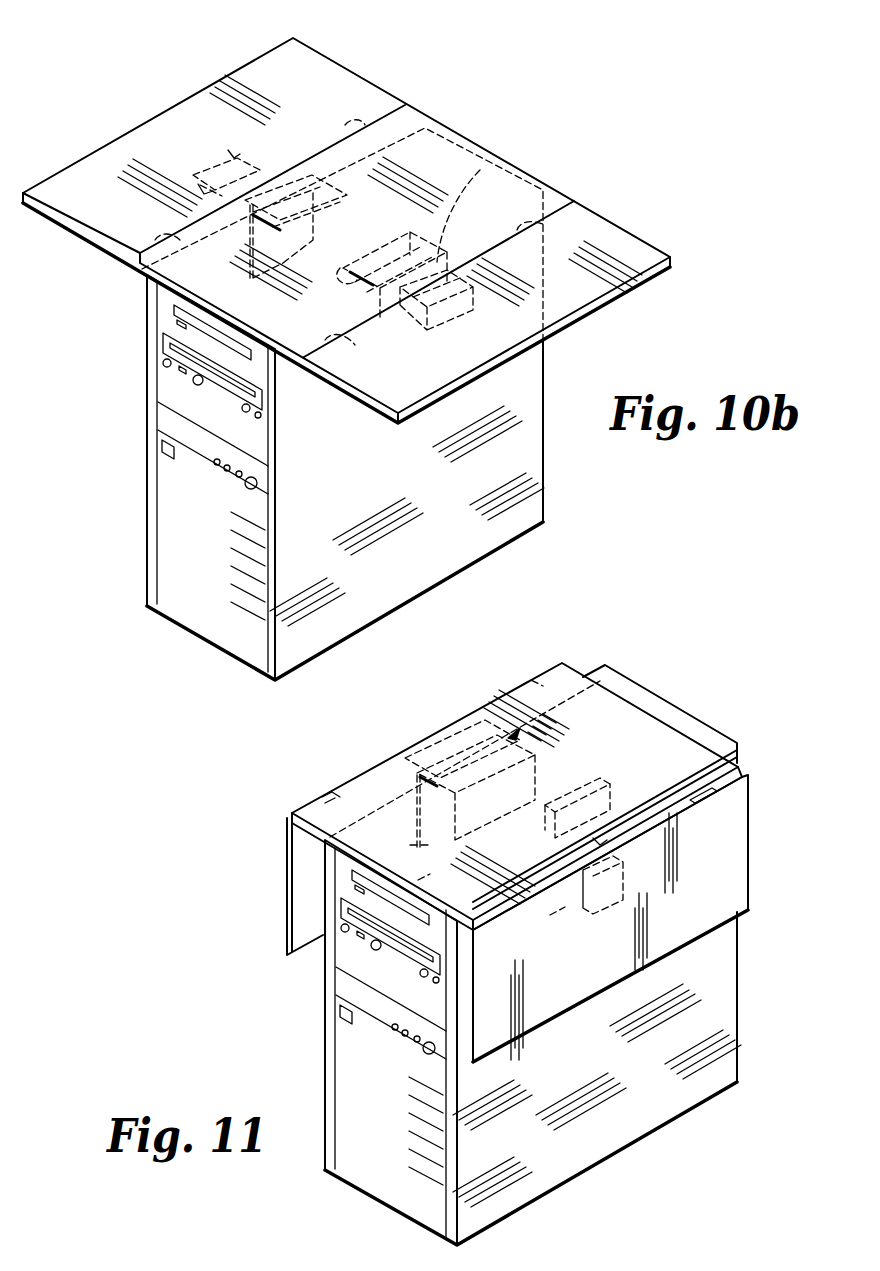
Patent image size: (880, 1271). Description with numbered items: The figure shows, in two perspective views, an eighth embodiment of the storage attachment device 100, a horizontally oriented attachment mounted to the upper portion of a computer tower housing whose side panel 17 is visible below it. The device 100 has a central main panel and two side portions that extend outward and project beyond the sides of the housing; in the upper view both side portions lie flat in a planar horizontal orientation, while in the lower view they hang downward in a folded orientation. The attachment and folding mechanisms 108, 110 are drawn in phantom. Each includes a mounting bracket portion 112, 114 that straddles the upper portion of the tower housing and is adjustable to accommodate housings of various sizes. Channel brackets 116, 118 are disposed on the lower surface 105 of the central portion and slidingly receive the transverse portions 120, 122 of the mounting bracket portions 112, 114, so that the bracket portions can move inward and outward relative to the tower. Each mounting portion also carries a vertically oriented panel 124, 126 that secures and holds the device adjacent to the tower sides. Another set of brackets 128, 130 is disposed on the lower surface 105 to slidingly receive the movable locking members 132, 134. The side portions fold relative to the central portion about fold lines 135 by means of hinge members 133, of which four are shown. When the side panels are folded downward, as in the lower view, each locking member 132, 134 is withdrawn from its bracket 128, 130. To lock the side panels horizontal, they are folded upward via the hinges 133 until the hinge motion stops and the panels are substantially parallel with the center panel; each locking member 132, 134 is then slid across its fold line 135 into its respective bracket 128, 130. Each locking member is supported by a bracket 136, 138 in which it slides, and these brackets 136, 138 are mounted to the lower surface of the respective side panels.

In FIG. 10B, the storage attachment device 100 is at (473, 101).
In FIG. 11, the storage attachment device 100 is at (492, 923).
In FIG. 10B, the lower surface 105 is at (145, 277).
In FIG. 11, the attachment and folding mechanism 108 is at (580, 803).
In FIG. 11, the attachment and folding mechanism 110 is at (530, 680).
In FIG. 11, the mounting bracket portion 112 is at (639, 723).
In FIG. 11, the mounting bracket portion 114 is at (417, 833).
In FIG. 10B, the channel bracket 116 is at (480, 170).
In FIG. 11, the channel bracket 116 is at (620, 803).
In FIG. 10B, the channel bracket 118 is at (310, 173).
In FIG. 11, the channel bracket 118 is at (410, 790).
In FIG. 11, the transverse portion 120 is at (590, 807).
In FIG. 11, the transverse portion 122 is at (550, 807).
In FIG. 11, the vertically oriented panel 124 is at (557, 913).
In FIG. 11, the vertically oriented panel 126 is at (423, 877).
In FIG. 11, the bracket 128 is at (687, 797).
In FIG. 11, the bracket 130 is at (447, 740).
In FIG. 10B, the locking member 132 is at (513, 383).
In FIG. 11, the locking member 132 is at (627, 902).
In FIG. 11, the hinge member 133 is at (713, 805).
In FIG. 10B, the locking member 134 is at (233, 157).
In FIG. 10B, the fold line 135 is at (137, 252).
In FIG. 11, the fold line 135 is at (746, 772).
In FIG. 10B, the bracket 136 is at (437, 262).
In FIG. 10B, the bracket 138 is at (207, 193).
In FIG. 11, the side panel 17 is at (680, 1100).